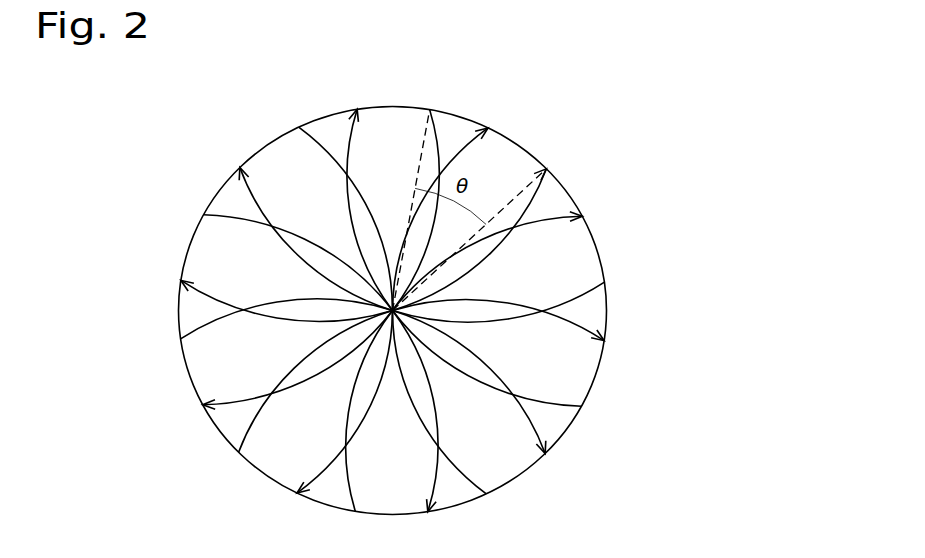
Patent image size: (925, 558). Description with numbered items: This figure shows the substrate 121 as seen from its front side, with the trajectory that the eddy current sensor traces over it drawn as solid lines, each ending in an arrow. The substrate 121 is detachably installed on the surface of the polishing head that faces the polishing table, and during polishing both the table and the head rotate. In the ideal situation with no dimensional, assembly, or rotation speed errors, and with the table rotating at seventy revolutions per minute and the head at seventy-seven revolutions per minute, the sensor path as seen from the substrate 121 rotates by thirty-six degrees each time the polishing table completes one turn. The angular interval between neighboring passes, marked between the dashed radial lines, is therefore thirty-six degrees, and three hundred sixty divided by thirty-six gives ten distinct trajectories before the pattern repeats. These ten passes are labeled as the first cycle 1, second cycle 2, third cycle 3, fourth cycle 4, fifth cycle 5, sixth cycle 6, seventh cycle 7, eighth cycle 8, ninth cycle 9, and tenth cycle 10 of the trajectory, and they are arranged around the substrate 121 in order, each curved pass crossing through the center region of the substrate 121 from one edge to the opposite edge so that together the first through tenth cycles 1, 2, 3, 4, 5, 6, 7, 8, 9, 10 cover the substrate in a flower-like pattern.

The first cycle of the trajectory 1 is at (321, 243).
The second cycle of the trajectory 2 is at (374, 227).
The third cycle of the trajectory 3 is at (431, 245).
The fourth cycle of the trajectory 4 is at (475, 267).
The fifth cycle of the trajectory 5 is at (450, 329).
The sixth cycle of the trajectory 6 is at (464, 383).
The seventh cycle of the trajectory 7 is at (412, 396).
The eighth cycle of the trajectory 8 is at (345, 376).
The ninth cycle of the trajectory 9 is at (307, 357).
The tenth cycle of the trajectory 10 is at (335, 296).
The substrate 121 is at (592, 237).